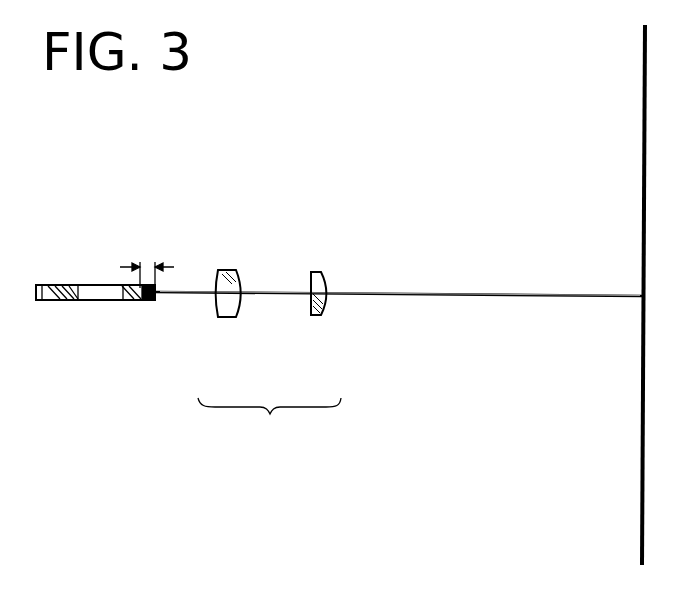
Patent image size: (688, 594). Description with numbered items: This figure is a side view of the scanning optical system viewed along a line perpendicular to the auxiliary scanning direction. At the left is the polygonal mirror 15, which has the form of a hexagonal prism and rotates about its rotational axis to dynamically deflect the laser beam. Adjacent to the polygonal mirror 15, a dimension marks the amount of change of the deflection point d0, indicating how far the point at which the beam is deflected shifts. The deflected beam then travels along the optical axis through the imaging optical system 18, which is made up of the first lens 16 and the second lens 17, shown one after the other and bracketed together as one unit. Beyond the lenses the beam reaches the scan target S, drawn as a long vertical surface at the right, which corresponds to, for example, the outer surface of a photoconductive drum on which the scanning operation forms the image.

The polygonal mirror 15 is at (66, 301).
The first lens 16 is at (227, 318).
The second lens 17 is at (317, 316).
The imaging optical system 18 is at (269, 419).
The scan target S is at (643, 98).
The amount of change of the deflection point d0 is at (143, 266).